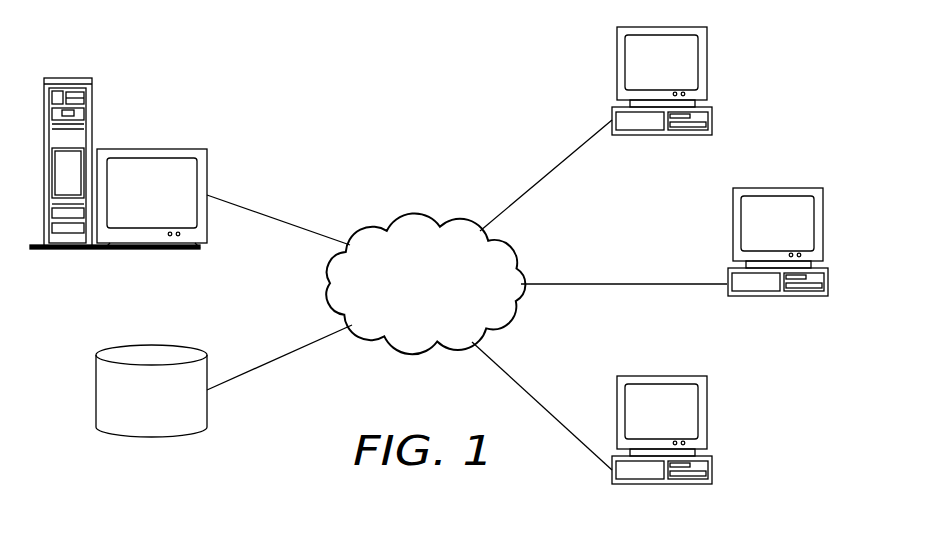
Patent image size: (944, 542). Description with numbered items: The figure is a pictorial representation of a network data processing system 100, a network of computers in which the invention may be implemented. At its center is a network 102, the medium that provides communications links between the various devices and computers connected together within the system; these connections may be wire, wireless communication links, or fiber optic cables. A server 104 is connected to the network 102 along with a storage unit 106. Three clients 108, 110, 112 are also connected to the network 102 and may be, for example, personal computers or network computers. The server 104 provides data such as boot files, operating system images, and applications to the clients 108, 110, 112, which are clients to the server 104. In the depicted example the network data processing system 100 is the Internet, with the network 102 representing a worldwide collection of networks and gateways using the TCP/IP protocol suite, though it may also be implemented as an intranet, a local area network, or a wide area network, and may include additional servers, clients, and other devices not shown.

The network data processing system 100 is at (295, 66).
The network 102 is at (407, 312).
The server 104 is at (151, 148).
The storage unit 106 is at (96, 392).
The client 108 is at (707, 68).
The client 110 is at (823, 232).
The client 112 is at (707, 418).